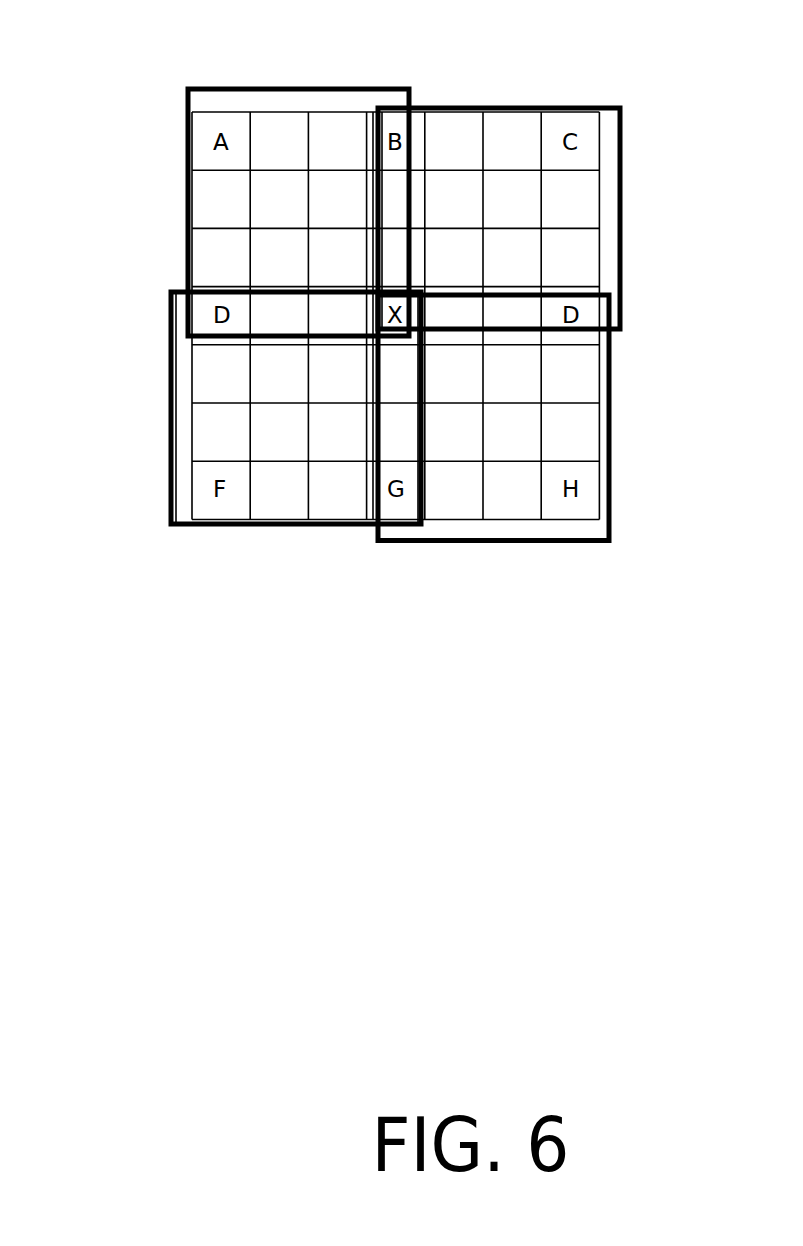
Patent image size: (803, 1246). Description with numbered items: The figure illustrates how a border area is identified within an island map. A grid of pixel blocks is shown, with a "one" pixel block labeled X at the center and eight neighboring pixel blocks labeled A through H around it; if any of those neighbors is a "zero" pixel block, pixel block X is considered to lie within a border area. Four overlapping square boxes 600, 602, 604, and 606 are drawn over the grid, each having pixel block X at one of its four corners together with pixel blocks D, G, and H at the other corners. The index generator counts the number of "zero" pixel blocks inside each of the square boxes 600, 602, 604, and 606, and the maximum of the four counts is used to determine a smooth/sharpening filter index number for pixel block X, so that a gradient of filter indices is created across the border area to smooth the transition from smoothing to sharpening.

The square box 600 is at (292, 88).
The square box 602 is at (503, 107).
The square box 604 is at (290, 528).
The square box 606 is at (500, 543).